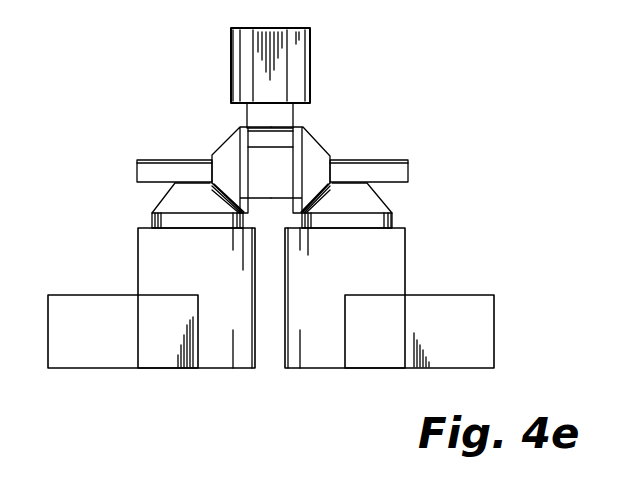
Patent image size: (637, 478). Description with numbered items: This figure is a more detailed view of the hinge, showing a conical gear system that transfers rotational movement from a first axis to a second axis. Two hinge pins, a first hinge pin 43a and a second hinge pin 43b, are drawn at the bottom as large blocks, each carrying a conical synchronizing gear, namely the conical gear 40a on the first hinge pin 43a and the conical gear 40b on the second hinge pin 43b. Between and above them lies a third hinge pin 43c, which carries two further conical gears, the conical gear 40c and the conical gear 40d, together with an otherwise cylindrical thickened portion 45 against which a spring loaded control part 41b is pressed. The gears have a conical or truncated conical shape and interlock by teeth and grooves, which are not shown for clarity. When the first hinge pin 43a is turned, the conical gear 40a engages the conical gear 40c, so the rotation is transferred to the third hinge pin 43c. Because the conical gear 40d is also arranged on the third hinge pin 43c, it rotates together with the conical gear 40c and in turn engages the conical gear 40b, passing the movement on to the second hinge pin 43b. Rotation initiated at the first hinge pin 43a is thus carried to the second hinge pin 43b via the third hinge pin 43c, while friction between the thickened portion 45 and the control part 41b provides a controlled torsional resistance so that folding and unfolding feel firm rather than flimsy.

The thickened portion 45 is at (262, 160).
The control part 41b is at (283, 110).
The conical gear 40d is at (232, 147).
The conical gear 40c is at (312, 156).
The third hinge pin 43c is at (153, 167).
The conical gear 40b is at (176, 195).
The conical gear 40a is at (364, 200).
The second hinge pin 43b is at (157, 264).
The first hinge pin 43a is at (388, 253).